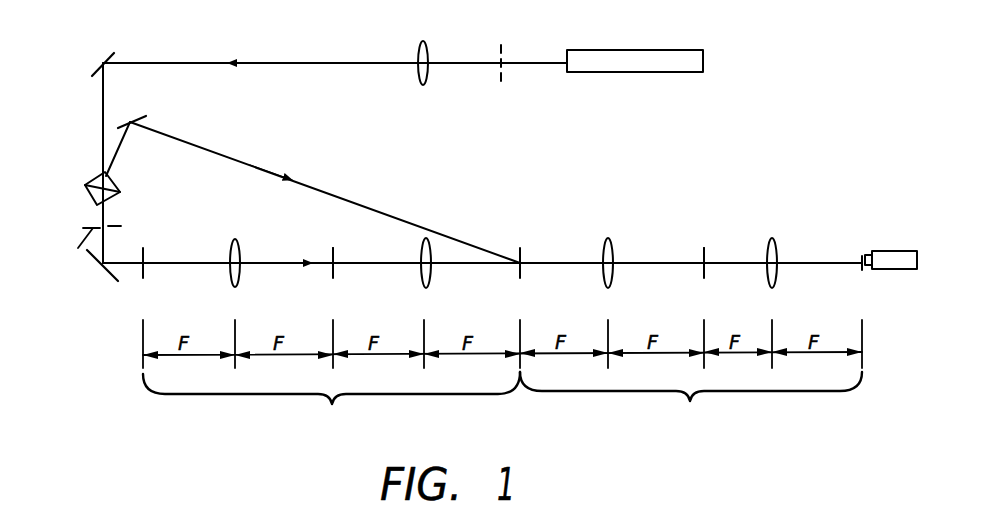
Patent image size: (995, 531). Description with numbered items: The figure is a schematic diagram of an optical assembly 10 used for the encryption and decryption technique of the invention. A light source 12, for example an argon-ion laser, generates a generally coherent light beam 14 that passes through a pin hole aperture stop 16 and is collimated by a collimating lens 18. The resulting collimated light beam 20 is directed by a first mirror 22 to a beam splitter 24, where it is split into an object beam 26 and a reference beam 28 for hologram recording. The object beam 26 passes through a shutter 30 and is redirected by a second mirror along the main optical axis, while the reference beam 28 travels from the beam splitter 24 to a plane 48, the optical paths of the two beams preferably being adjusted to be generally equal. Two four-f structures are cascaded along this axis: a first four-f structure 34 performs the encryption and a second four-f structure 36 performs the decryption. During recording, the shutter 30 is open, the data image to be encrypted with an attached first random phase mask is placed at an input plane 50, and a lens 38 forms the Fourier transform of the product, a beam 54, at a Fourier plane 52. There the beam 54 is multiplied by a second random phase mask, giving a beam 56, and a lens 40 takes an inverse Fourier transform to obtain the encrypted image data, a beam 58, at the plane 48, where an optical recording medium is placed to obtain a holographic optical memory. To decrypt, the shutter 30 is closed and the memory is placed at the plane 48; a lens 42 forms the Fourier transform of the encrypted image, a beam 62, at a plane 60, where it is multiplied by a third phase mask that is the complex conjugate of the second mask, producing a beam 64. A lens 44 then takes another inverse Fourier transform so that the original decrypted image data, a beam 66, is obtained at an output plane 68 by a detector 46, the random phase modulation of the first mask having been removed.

The optical assembly 10 is at (792, 87).
The light source 12 is at (632, 72).
The light beam 14 is at (527, 64).
The pin hole aperture stop 16 is at (507, 60).
The collimating lens 18 is at (424, 84).
The collimated light beam 20 is at (292, 60).
The first mirror 22 is at (110, 58).
The beam splitter 24 is at (100, 170).
The object beam 26 is at (108, 214).
The reference beam 28 is at (343, 193).
The shutter 30 is at (141, 255).
The first 4-f structure 34 is at (331, 406).
The second 4-f structure 36 is at (691, 404).
The lens 38 is at (240, 244).
The lens 40 is at (431, 268).
The lens 42 is at (612, 243).
The lens 44 is at (777, 242).
The detector 46 is at (894, 251).
The plane 48 is at (523, 252).
The input plane 50 is at (143, 273).
The Fourier plane 52 is at (335, 273).
The beam 54 is at (270, 265).
The beam 56 is at (345, 260).
The beam 58 is at (480, 265).
The plane 60 is at (706, 272).
The beam 62 is at (628, 262).
The beam 64 is at (730, 258).
The beam 66 is at (790, 262).
The output plane 68 is at (863, 266).